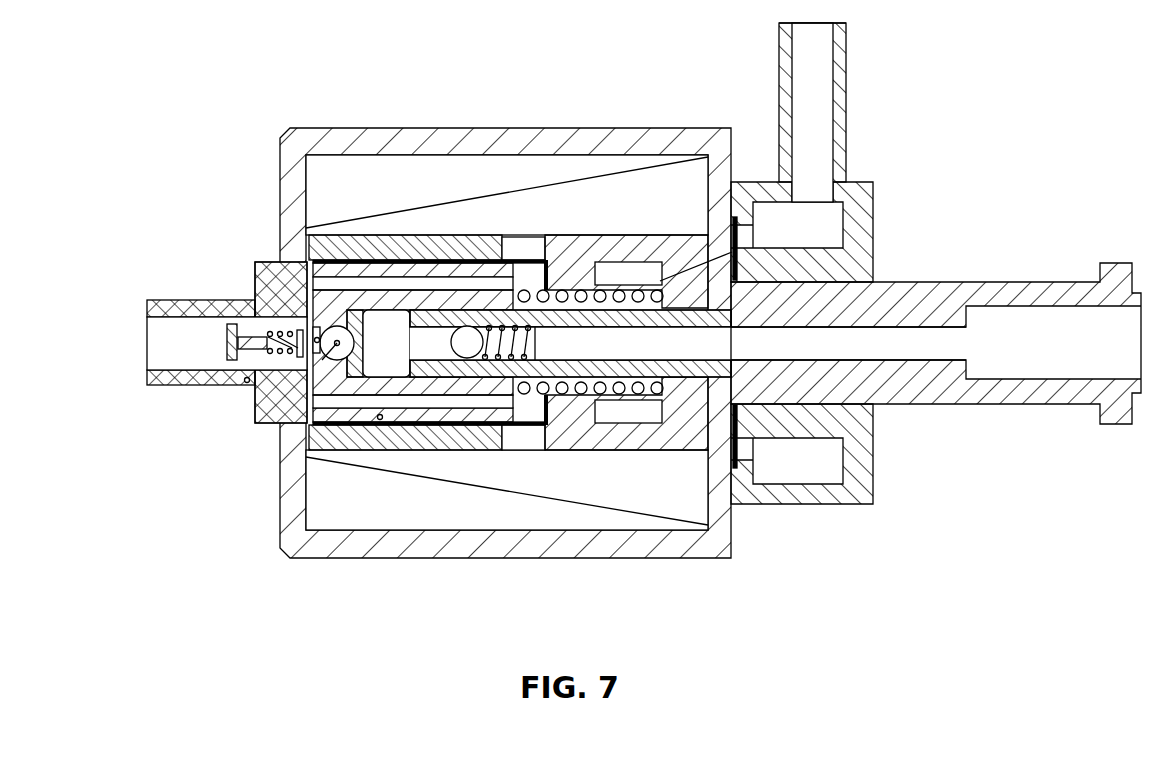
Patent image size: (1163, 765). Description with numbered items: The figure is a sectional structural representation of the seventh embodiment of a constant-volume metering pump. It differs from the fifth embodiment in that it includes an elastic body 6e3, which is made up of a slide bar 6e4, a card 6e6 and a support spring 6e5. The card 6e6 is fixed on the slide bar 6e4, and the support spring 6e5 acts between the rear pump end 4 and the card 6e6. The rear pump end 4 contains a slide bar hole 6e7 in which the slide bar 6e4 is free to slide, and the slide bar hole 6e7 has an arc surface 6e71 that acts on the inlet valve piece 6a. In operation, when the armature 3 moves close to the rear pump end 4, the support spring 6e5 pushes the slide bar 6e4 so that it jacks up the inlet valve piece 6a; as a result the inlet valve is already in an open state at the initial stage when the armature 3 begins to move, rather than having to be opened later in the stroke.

The armature 3 is at (380, 419).
The rear pump end 4 is at (246, 382).
The inlet valve piece 6a is at (281, 427).
The elastic body 6e3 is at (207, 338).
The slide bar 6e4 is at (227, 332).
The support spring 6e5 is at (256, 412).
The card 6e6 is at (299, 333).
The slide bar hole 6e7 is at (258, 336).
The arc surface 6e71 is at (316, 338).